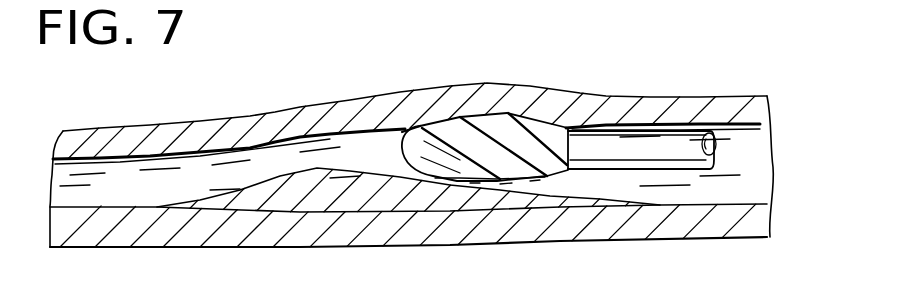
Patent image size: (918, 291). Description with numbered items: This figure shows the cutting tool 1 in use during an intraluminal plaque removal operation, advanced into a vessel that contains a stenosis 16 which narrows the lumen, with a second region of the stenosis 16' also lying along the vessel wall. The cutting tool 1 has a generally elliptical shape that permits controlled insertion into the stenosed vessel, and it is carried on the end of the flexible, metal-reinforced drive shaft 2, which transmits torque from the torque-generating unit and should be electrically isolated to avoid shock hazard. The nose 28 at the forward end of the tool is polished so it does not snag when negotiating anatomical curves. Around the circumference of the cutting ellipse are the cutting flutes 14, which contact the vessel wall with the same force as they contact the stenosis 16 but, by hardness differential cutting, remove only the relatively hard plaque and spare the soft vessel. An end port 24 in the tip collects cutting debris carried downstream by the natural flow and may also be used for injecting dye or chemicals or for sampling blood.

The cutting tool 1 is at (432, 114).
The drive shaft 2 is at (638, 124).
The cutting flutes 14 is at (528, 131).
The stenosis 16 is at (412, 171).
The separated vessel wall layer / intima flap 16' is at (408, 190).
The end port 24 is at (401, 158).
The nose 28 is at (398, 131).